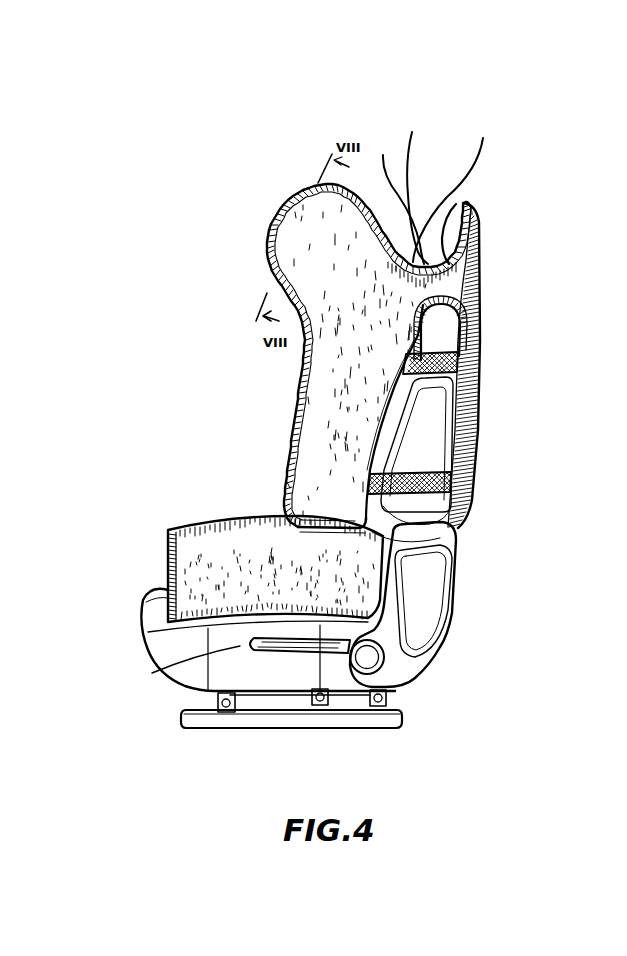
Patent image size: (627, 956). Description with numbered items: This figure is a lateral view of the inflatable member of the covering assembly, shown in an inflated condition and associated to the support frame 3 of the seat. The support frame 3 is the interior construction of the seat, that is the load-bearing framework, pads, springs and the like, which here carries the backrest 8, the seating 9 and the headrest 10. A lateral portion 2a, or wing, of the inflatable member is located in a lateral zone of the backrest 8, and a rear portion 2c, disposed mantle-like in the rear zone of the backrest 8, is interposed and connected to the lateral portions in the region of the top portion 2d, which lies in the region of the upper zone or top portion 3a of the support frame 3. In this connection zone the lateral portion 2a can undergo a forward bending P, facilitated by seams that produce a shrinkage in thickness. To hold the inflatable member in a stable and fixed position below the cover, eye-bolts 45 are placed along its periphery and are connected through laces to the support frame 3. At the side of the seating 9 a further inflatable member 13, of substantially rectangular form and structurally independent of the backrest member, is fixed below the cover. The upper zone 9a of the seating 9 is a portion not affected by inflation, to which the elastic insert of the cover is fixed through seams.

The lateral portion 2a is at (318, 415).
The rear portion 2c is at (480, 338).
The top portion 2d is at (483, 262).
The support frame 3 is at (449, 632).
The top portion of the support frame 3a is at (472, 370).
The backrest 8 is at (422, 440).
The seating 9 is at (235, 648).
The upper zone of the seating 9a is at (153, 600).
The headrest 10 is at (345, 185).
The inflatable member 13 is at (193, 550).
The eye-bolts 45 is at (290, 487).
The bending P is at (452, 190).